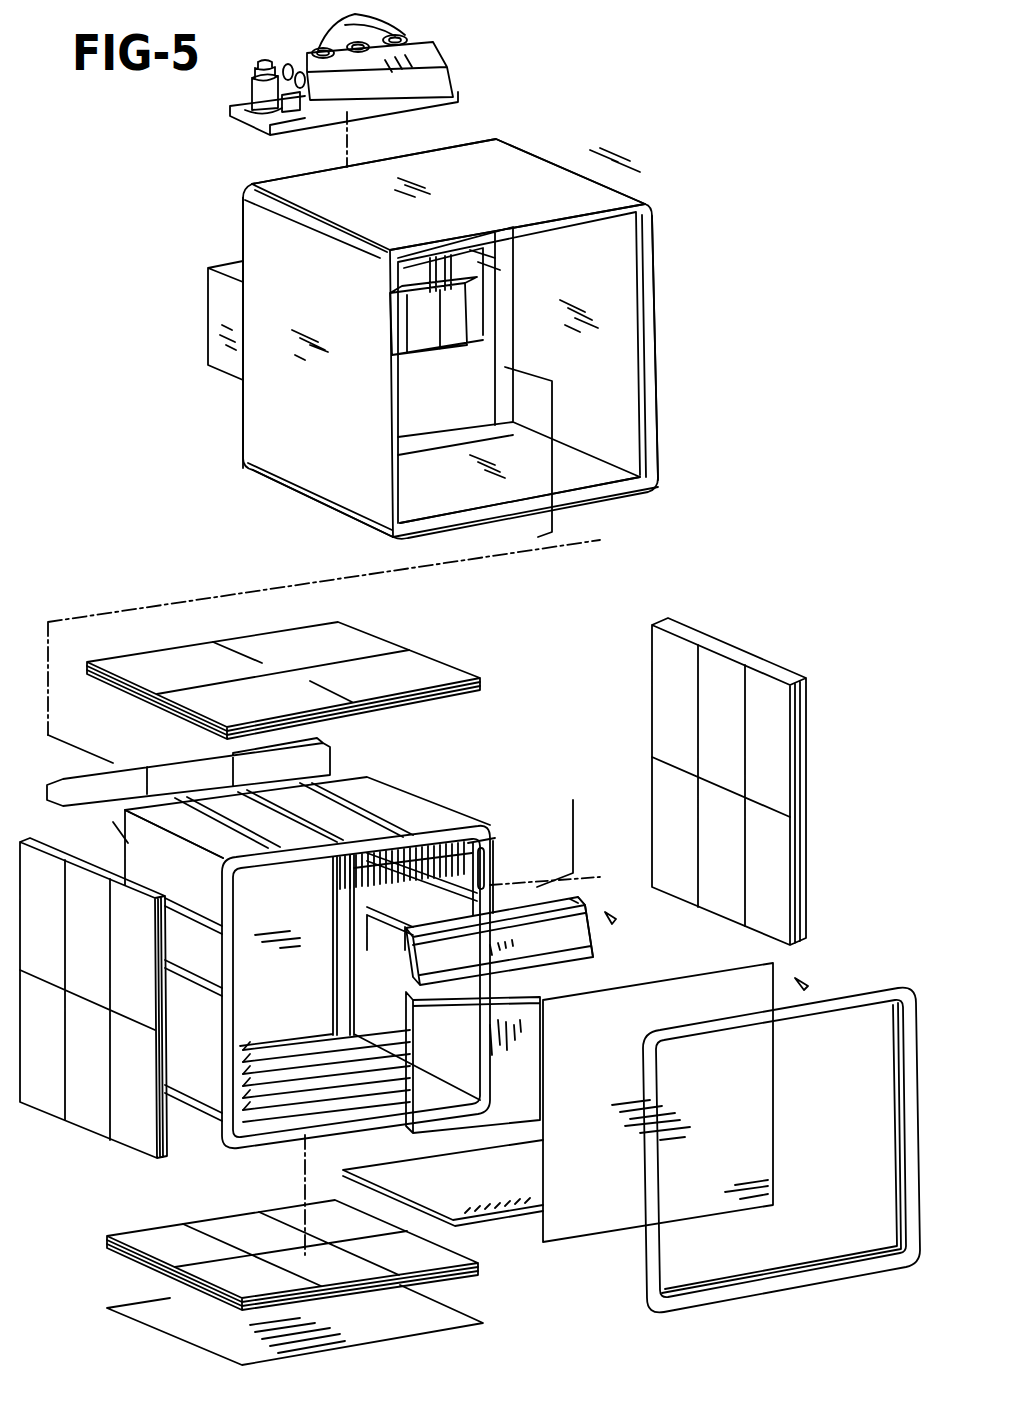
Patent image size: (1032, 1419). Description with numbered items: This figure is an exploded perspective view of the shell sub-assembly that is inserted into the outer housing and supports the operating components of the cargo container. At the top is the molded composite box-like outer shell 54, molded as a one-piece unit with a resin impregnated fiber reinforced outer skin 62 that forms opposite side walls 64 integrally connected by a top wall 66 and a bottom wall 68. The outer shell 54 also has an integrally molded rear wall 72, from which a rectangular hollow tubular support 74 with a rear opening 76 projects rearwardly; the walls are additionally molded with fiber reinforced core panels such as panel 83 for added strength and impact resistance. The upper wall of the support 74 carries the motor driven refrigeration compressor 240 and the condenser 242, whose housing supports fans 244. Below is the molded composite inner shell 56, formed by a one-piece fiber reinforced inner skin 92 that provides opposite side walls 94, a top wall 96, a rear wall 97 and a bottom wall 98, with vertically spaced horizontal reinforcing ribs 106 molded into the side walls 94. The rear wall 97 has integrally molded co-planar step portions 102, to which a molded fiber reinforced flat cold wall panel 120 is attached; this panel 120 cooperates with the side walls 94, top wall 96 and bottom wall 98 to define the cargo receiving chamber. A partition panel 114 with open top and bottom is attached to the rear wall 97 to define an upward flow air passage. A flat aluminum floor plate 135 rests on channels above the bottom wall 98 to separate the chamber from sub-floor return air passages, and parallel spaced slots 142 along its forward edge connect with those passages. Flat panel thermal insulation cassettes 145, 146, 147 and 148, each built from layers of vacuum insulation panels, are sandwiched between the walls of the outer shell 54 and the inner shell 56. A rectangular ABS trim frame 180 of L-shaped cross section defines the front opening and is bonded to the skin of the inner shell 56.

The outer shell 54 is at (574, 165).
The inner shell 56 is at (392, 778).
The outer skin 62 is at (268, 407).
The side walls 64 is at (612, 288).
The top wall 66 is at (512, 152).
The bottom wall 68 is at (603, 497).
The rear wall 72 is at (432, 410).
The tubular support 74 is at (215, 300).
The rear opening 76 is at (413, 268).
The fiber reinforced panel 83 is at (460, 1318).
The inner skin 92 is at (204, 1078).
The side walls 94 is at (128, 843).
The top wall 96 is at (330, 815).
The rear wall 97 is at (285, 912).
The bottom wall 98 is at (398, 1040).
The step portions 102 is at (400, 952).
The reinforcing ribs 106 is at (435, 862).
The partition panel 114 is at (565, 935).
The flat panel 120 is at (762, 1055).
The floor plate 135 is at (487, 1152).
The slots 142 is at (470, 1218).
The insulation cassette 145 is at (727, 648).
The insulation cassette 146 is at (367, 630).
The insulation cassette 147 is at (133, 1266).
The insulation cassette 148 is at (163, 758).
The trim frame 180 is at (847, 990).
The refrigeration compressor 240 is at (258, 92).
The condenser 242 is at (405, 63).
The fans 244 is at (340, 27).